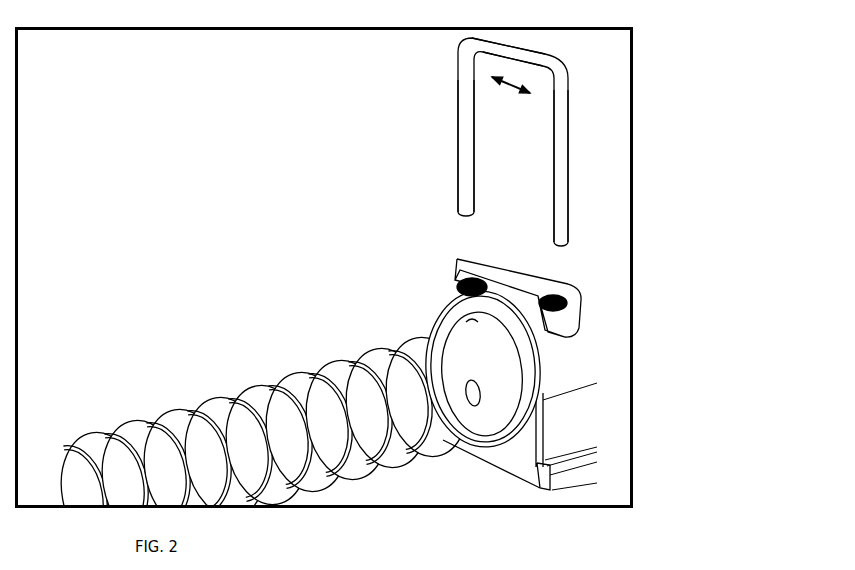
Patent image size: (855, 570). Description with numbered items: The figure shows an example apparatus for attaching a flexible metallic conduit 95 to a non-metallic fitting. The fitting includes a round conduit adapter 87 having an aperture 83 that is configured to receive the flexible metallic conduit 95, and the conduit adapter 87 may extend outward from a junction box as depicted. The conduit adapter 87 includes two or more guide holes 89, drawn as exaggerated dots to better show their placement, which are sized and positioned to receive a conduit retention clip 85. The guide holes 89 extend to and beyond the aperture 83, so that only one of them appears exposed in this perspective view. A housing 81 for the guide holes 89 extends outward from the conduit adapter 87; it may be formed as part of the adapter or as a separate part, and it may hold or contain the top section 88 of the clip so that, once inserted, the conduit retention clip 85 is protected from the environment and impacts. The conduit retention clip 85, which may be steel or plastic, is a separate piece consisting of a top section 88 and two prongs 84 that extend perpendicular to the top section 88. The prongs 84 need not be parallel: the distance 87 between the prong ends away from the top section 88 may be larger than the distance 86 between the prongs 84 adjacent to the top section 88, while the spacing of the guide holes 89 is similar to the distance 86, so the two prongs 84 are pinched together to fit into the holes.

The housing 81 is at (533, 265).
The aperture 83 is at (495, 368).
The prongs 84 is at (553, 130).
The conduit retention clip 85 is at (535, 60).
The distance between the prongs adjacent to the top section 86 is at (511, 94).
The conduit adapter 87 is at (362, 200).
The top section 88 is at (533, 65).
The guide holes 89 is at (558, 299).
The flexible metallic conduit 95 is at (342, 374).